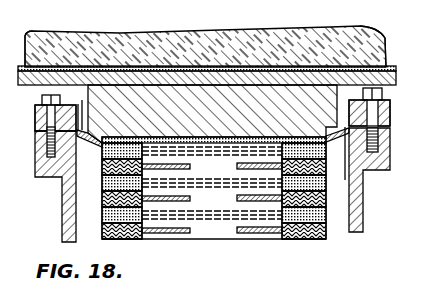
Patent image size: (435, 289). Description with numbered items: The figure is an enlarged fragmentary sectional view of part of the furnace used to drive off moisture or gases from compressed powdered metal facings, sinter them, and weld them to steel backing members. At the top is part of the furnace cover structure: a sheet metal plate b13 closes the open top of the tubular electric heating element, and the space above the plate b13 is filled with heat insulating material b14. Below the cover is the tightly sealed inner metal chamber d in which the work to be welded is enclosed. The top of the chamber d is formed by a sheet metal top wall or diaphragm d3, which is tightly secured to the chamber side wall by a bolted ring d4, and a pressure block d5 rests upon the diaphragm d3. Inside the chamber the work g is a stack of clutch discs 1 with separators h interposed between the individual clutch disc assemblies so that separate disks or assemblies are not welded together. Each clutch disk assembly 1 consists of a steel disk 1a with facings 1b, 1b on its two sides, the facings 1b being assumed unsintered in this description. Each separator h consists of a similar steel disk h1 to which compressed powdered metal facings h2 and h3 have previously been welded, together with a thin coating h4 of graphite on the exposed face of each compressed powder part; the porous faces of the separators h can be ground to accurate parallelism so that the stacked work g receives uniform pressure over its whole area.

The sheet metal plate b13 is at (373, 22).
The heat insulating material b14 is at (204, 52).
The pressure block d5 is at (150, 100).
The sheet metal top wall or diaphragm d3 is at (78, 104).
The bolted ring d4 is at (35, 120).
The inner sealed chamber d is at (366, 233).
The separator h is at (97, 183).
The insulating layer 1 is at (97, 201).
The graphite coating h4 is at (326, 184).
The compressed powdered metal facing h2 is at (324, 205).
The steel disk h1 is at (324, 209).
The compressed powdered metal facing h3 is at (324, 213).
The steel disk 1a is at (267, 237).
The facing 1b is at (325, 222).
The work g is at (217, 247).